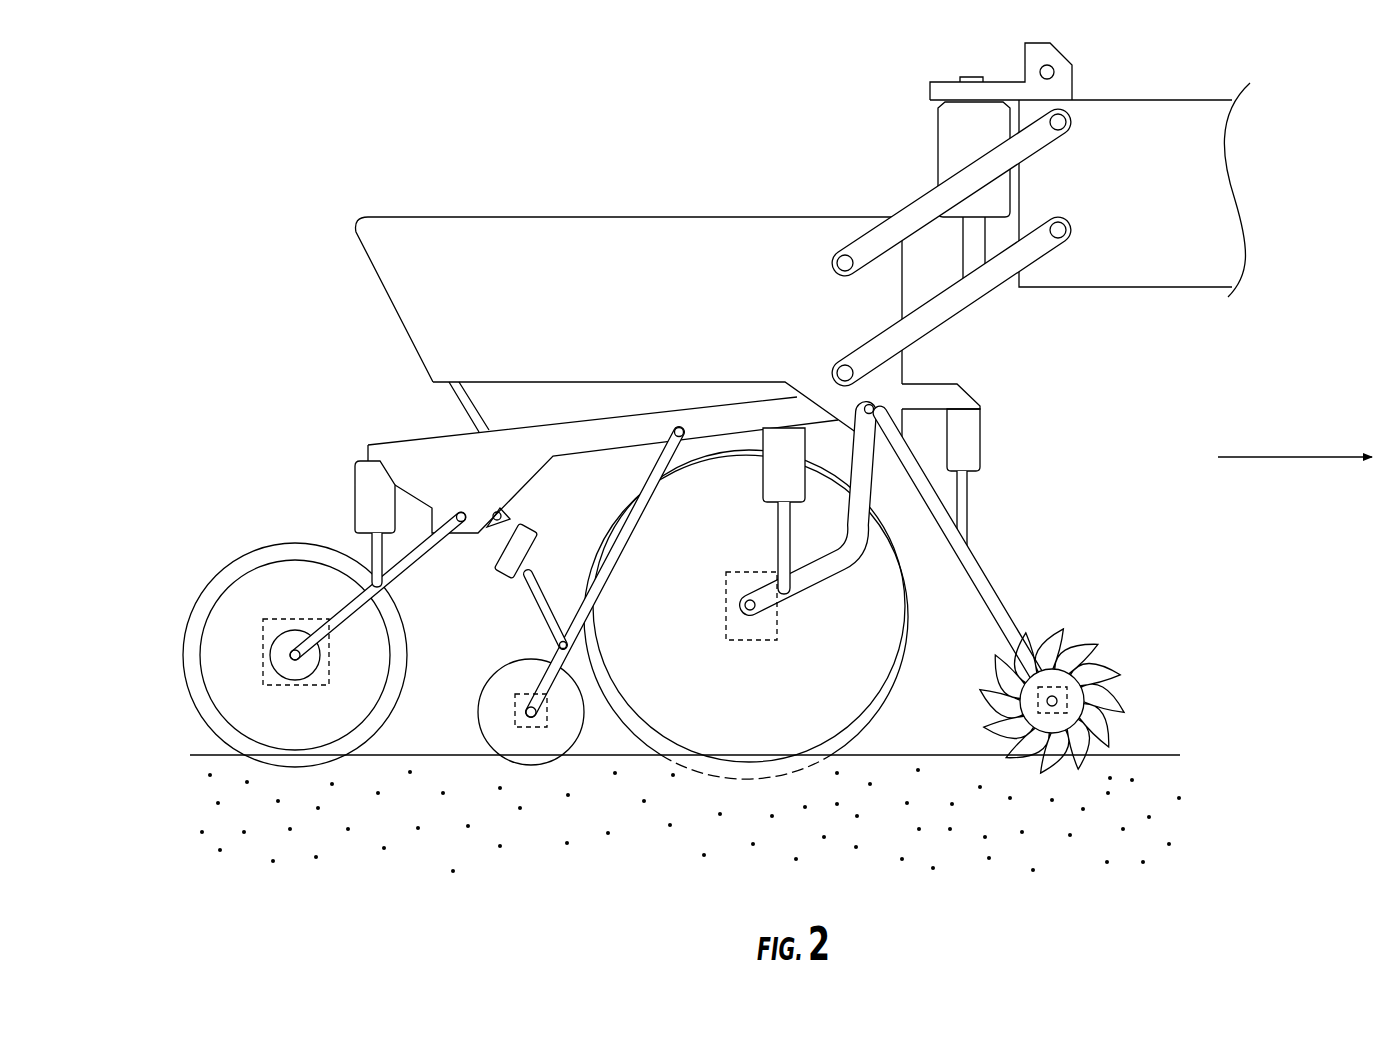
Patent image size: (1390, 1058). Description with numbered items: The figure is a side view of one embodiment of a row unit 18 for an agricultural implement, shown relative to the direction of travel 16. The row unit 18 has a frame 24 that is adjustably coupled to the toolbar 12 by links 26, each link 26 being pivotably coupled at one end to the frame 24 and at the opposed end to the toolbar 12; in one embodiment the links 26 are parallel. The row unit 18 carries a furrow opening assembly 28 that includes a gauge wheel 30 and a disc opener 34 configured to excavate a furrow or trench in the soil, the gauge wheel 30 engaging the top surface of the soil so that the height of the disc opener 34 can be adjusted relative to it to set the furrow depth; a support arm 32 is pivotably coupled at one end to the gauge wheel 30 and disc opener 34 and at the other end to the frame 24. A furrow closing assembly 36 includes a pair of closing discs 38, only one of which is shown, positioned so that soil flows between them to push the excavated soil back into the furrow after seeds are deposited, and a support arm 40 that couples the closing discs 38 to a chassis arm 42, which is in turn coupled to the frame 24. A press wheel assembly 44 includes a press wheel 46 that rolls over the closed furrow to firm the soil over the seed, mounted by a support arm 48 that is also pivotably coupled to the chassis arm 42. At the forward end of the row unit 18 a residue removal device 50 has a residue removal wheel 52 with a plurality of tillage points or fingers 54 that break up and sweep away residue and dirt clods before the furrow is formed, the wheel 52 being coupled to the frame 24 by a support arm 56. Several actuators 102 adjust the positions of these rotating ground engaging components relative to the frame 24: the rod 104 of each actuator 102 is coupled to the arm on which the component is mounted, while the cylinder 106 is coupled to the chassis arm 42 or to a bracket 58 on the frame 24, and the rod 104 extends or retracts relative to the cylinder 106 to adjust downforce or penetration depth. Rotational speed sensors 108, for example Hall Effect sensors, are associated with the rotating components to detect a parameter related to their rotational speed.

The toolbar 12 is at (1170, 100).
The direction of travel 16 is at (1296, 456).
The row unit 18 is at (380, 118).
The frame 24 is at (630, 215).
The links 26 is at (1050, 215).
The furrow opening assembly 28 is at (768, 633).
The gauge wheel 30 is at (908, 570).
The support arm 32 is at (800, 608).
The disc opener 34 is at (685, 783).
The furrow closing assembly 36 is at (498, 636).
The closing disc 38 is at (478, 722).
The support arm 40 is at (655, 470).
The chassis arm 42 is at (388, 443).
The press wheel assembly 44 is at (298, 618).
The press wheel 46 is at (185, 648).
The support arm 48 is at (418, 572).
The residue removal device 50 is at (1013, 554).
The residue removal wheel 52 is at (1075, 706).
The tillage points or fingers 54 is at (1098, 655).
The support arm 56 is at (993, 598).
The bracket 58 is at (948, 384).
The actuator 102 is at (675, 517).
The rod 104 is at (362, 540).
The cylinder 106 is at (355, 490).
The rotational speed sensor 108 is at (262, 625).